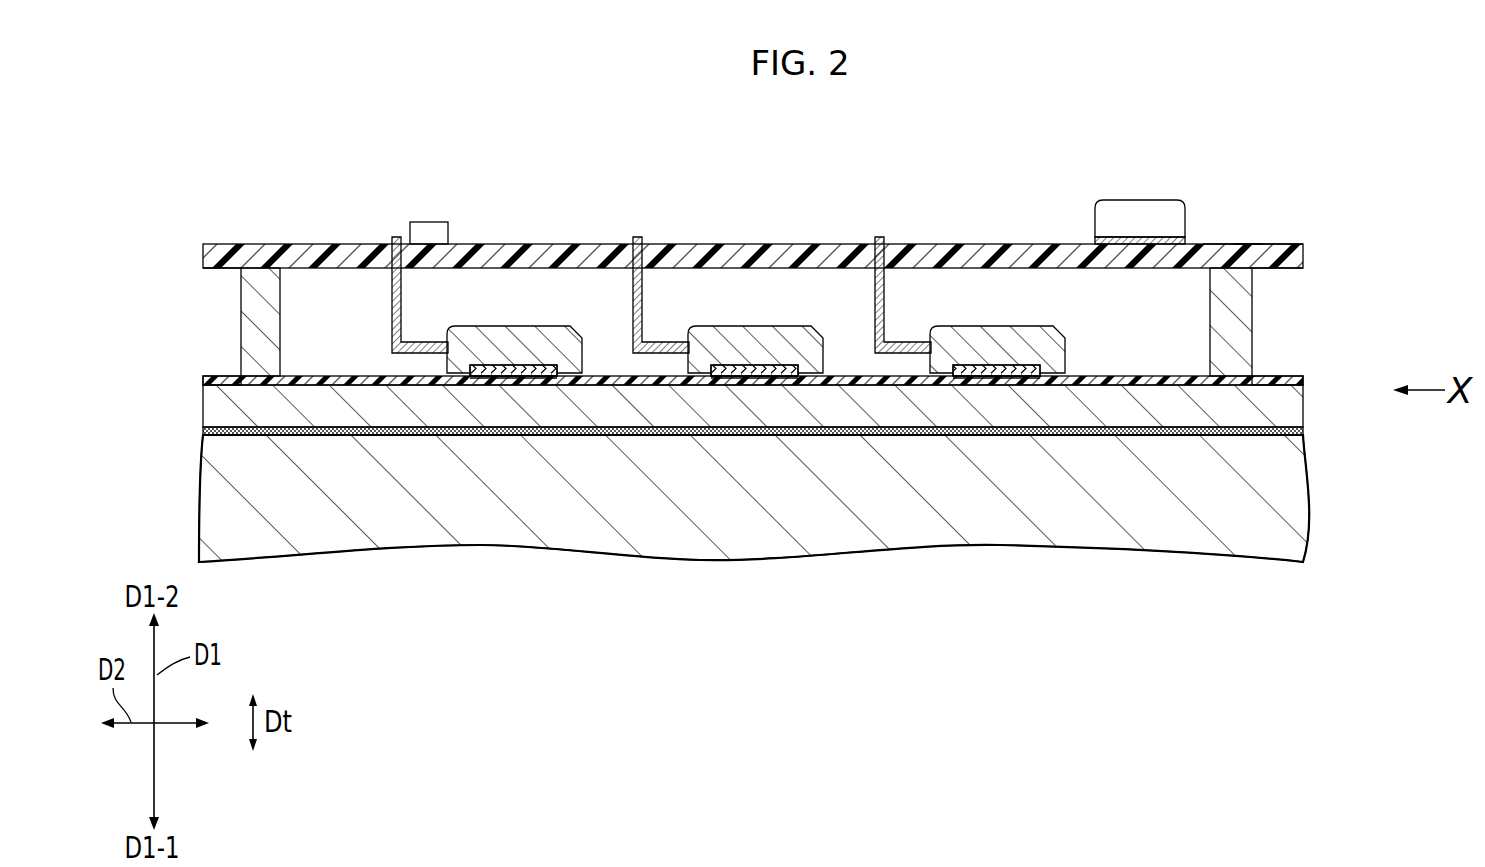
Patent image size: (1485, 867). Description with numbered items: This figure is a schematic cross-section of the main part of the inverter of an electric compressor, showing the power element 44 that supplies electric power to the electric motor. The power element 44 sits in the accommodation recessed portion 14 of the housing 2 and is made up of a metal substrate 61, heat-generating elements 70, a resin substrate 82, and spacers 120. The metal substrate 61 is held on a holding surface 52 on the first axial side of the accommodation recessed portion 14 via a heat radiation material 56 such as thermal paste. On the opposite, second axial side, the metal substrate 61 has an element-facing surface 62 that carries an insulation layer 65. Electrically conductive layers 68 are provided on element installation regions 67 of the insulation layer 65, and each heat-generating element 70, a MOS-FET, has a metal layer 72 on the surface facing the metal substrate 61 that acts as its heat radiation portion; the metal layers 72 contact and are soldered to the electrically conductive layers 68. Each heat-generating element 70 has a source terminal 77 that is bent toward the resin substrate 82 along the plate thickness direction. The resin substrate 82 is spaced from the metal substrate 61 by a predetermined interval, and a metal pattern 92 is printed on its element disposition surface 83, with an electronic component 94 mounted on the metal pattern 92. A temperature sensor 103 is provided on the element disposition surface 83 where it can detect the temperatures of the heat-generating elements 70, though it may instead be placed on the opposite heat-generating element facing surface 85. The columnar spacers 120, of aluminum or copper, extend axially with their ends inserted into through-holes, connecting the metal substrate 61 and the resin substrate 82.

The housing 2 is at (1262, 493).
The accommodation recessed portion 14 is at (227, 299).
The power element 44 is at (1266, 230).
The holding surface 52 is at (1263, 428).
The heat radiation material 56 is at (223, 432).
The metal substrate 61 is at (1267, 406).
The element-facing surface 62 is at (1265, 378).
The insulation layer 65 is at (222, 382).
The element installation region 67 is at (493, 375).
The electrically conductive layer 68 is at (537, 378).
The heat-generating element 70 is at (540, 342).
The metal layer 72 is at (512, 367).
The source terminal 77 is at (392, 293).
The resin substrate 82 is at (1280, 258).
The element disposition surface 83 is at (1233, 243).
The heat-generating element facing surface 85 is at (1267, 272).
The metal pattern 92 is at (1150, 238).
The electronic component 94 is at (1112, 212).
The temperature sensor 103 is at (428, 222).
The spacer 120 is at (280, 297).